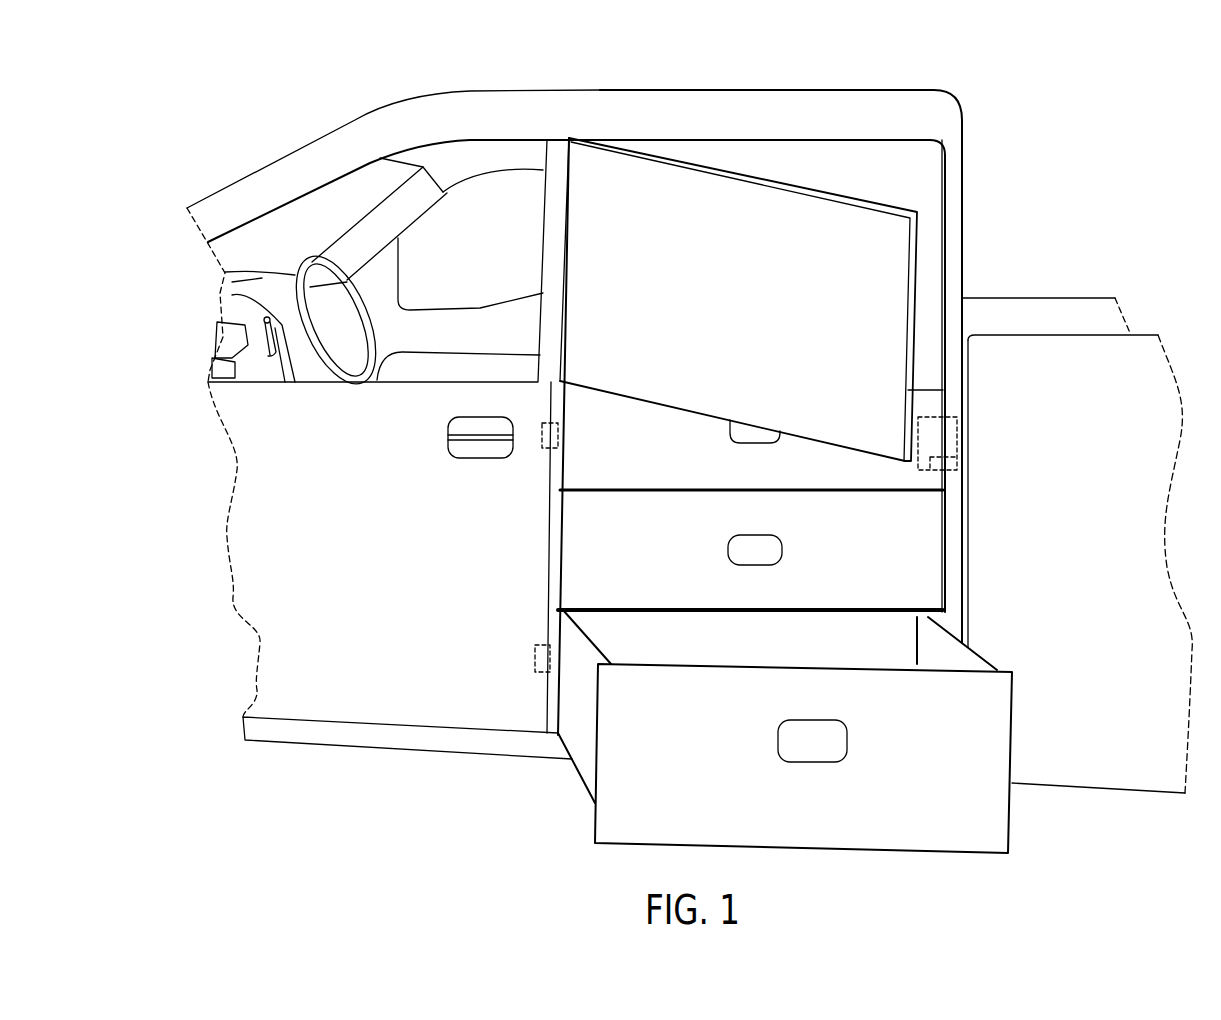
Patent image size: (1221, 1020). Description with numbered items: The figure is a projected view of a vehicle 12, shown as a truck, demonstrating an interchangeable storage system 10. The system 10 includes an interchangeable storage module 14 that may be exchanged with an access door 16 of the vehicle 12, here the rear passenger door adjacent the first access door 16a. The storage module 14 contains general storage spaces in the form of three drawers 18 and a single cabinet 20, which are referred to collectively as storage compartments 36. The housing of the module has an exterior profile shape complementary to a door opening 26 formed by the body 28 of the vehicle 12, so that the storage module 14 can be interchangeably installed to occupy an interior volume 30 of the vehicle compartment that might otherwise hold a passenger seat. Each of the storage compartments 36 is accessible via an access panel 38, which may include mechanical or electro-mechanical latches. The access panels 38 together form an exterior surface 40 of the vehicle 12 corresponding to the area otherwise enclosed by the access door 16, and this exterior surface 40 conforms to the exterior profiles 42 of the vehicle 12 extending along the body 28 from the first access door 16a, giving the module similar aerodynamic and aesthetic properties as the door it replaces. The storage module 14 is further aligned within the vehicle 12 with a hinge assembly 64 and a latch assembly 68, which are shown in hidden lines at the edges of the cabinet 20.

The interchangeable storage system 10 is at (990, 118).
The vehicle 12 is at (204, 106).
The interchangeable storage module 14 is at (948, 207).
The access door 16 is at (369, 436).
The first access door 16a is at (369, 436).
The drawer 18 is at (575, 465).
The cabinet 20 is at (907, 275).
The door opening 26 is at (619, 316).
The body 28 is at (703, 110).
The interior volume 30 is at (871, 151).
The storage compartments 36 is at (632, 360).
The access panel 38 is at (747, 534).
The exterior surface 40 is at (486, 205).
The exterior profiles 42 is at (580, 150).
The hinge assembly 64 is at (545, 424).
The latch assembly 68 is at (952, 417).